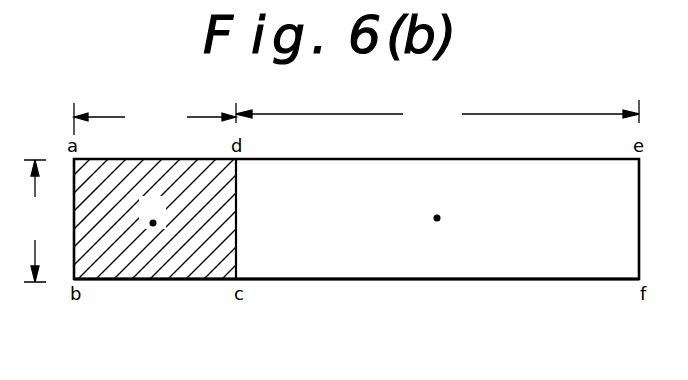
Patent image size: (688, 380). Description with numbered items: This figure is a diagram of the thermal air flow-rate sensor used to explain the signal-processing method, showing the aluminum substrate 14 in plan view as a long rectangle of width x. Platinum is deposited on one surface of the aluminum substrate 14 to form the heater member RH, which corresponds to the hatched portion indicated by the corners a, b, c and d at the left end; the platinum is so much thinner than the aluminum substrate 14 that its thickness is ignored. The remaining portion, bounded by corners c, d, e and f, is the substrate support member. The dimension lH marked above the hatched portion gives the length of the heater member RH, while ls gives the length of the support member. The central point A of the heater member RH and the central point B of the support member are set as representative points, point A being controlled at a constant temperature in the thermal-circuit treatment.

The aluminum substrate 14 is at (401, 267).
The heater member RH is at (153, 268).
The representative point of the heater member A is at (152, 212).
The representative point of the support member B is at (433, 207).
The length of the heater member lH is at (155, 119).
The length of the substrate support member ls is at (437, 113).
The width of the aluminum substrate x is at (31, 221).